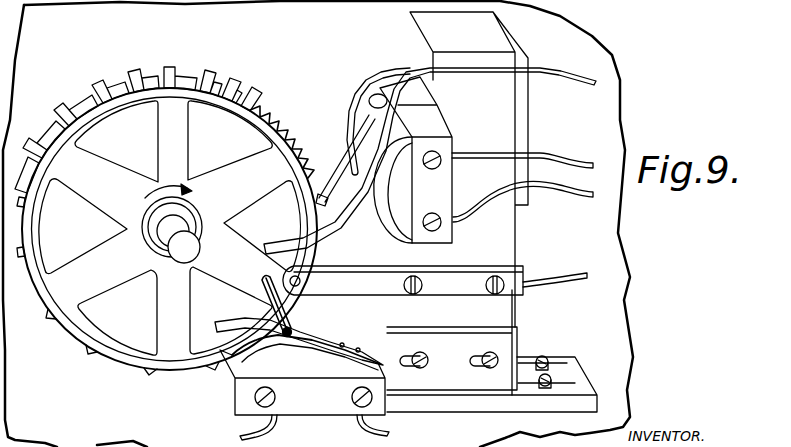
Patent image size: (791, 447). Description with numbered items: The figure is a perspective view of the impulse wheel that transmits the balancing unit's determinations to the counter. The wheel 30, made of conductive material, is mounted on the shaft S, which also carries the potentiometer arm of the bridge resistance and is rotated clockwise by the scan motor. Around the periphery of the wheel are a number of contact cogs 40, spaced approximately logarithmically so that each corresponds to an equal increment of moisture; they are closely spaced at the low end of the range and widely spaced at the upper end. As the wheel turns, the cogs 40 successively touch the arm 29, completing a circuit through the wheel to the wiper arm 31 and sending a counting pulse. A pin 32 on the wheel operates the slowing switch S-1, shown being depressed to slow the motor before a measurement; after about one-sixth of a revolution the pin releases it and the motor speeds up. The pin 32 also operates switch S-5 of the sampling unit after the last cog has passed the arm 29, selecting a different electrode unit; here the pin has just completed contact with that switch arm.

The contact cogs 40 is at (190, 62).
The impulse wheel 30 is at (247, 97).
The contact arm 29 is at (337, 171).
The pin 32 is at (264, 276).
The switch of the sampling unit S-5 is at (324, 233).
The shaft S is at (178, 252).
The slowing switch S-1 is at (248, 318).
The wiper arm 31 is at (320, 292).